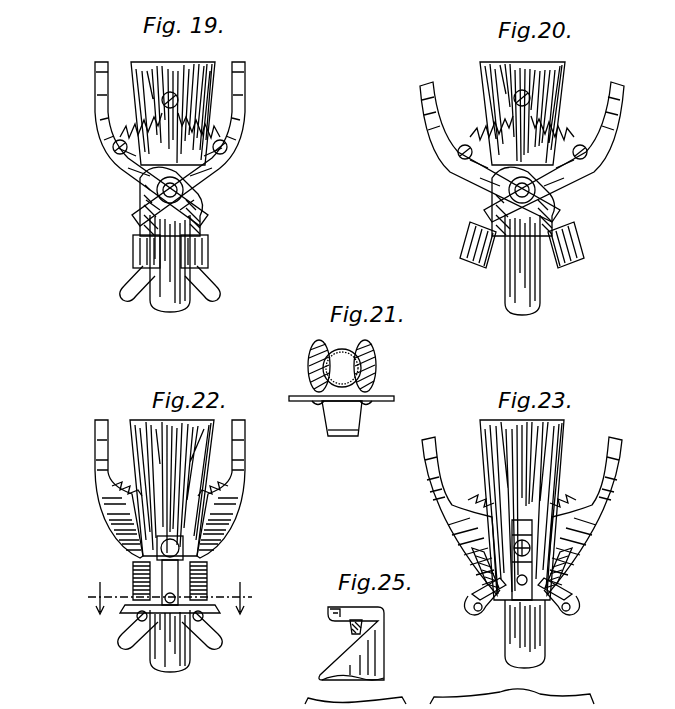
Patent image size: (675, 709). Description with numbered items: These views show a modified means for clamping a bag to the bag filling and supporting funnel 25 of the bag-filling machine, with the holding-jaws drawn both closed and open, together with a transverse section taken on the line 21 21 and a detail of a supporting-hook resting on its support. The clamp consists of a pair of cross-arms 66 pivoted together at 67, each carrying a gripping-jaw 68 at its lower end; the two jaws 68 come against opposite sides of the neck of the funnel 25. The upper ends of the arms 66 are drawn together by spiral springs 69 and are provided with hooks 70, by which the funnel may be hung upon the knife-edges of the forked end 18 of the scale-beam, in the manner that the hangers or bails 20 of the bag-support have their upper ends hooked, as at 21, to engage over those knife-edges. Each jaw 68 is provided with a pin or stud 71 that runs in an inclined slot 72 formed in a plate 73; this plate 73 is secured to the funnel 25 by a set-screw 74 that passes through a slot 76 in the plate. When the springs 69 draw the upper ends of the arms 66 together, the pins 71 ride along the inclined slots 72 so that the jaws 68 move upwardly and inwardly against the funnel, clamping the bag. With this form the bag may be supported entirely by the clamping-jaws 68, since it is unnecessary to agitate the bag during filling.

In FIG. 25, the forked end of scale-beam 18 is at (364, 623).
In FIG. 20, the hangers or bails 20 is at (566, 70).
In FIG. 22, the hooked upper ends 21 is at (167, 598).
In FIG. 19, the bag filling and supporting funnel 25 is at (216, 66).
In FIG. 21, the bag filling and supporting funnel 25 is at (358, 356).
In FIG. 22, the bag filling and supporting funnel 25 is at (140, 420).
In FIG. 23, the bag filling and supporting funnel 25 is at (566, 434).
In FIG. 19, the cross-arms 66 is at (130, 172).
In FIG. 20, the cross-arms 66 is at (522, 159).
In FIG. 22, the cross-arms 66 is at (96, 452).
In FIG. 23, the cross-arms 66 is at (522, 516).
In FIG. 25, the cross-arms 66 is at (377, 652).
In FIG. 19, the pivot 67 is at (178, 192).
In FIG. 20, the pivot 67 is at (514, 192).
In FIG. 19, the gripping-jaws 68 is at (133, 249).
In FIG. 20, the gripping-jaws 68 is at (477, 236).
In FIG. 21, the gripping-jaws 68 is at (308, 367).
In FIG. 19, the spiral springs 69 is at (108, 119).
In FIG. 20, the spiral springs 69 is at (482, 130).
In FIG. 22, the spiral springs 69 is at (108, 481).
In FIG. 23, the spiral springs 69 is at (474, 494).
In FIG. 25, the hooks 70 is at (332, 611).
In FIG. 22, the pin or stud 71 is at (128, 614).
In FIG. 23, the pin or stud 71 is at (476, 614).
In FIG. 19, the inclined slot 72 is at (122, 280).
In FIG. 22, the inclined slot 72 is at (130, 638).
In FIG. 23, the inclined slot 72 is at (480, 592).
In FIG. 21, the plate 73 is at (325, 406).
In FIG. 22, the plate 73 is at (207, 572).
In FIG. 23, the plate 73 is at (560, 568).
In FIG. 22, the set-screw 74 is at (157, 546).
In FIG. 23, the set-screw 74 is at (505, 550).
In FIG. 21, the slot 76 is at (340, 414).
In FIG. 22, the slot 76 is at (162, 570).
In FIG. 23, the slot 76 is at (520, 548).